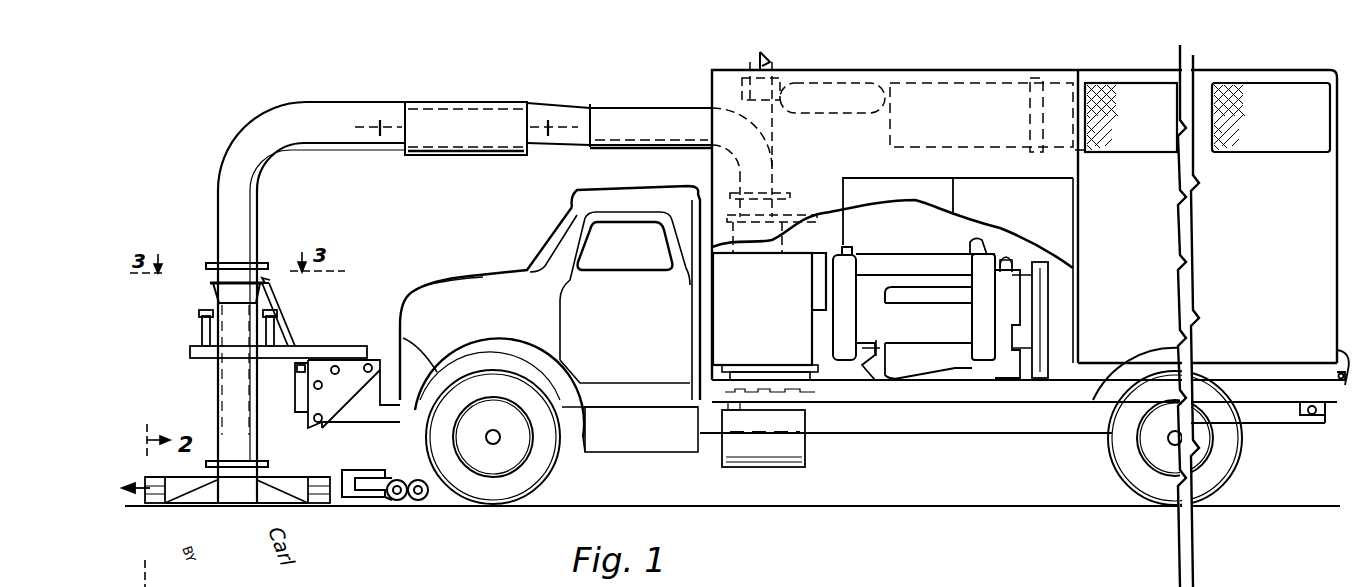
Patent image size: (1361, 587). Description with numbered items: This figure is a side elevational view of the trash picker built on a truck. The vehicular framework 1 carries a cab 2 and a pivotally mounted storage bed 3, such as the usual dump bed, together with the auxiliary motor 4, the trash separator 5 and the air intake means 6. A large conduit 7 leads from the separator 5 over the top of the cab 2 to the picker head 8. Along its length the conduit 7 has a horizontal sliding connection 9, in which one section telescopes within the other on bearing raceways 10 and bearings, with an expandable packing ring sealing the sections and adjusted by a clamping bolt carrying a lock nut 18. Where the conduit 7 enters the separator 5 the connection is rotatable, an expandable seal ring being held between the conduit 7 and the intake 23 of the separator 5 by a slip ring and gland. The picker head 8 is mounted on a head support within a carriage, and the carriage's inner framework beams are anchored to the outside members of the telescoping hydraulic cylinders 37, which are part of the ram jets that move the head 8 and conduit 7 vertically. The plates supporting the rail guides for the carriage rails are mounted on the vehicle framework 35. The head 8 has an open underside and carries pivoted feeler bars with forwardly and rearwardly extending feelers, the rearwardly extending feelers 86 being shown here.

The vehicular framework 1 is at (1142, 309).
The cab 2 is at (640, 186).
The pivotally mounted storage bed 3 is at (1348, 360).
The auxiliary motor 4 is at (930, 366).
The trash separator 5 is at (725, 325).
The air intake means 6 is at (1147, 100).
The large conduit 7 is at (262, 182).
The picker head 8 is at (380, 130).
The horizontal sliding connection 9 is at (462, 102).
The bearing raceways 10 is at (238, 275).
The lock nut 18 is at (278, 478).
The intake 23 is at (742, 200).
The vehicle framework 35 is at (395, 430).
The telescoping hydraulic cylinders 37 is at (200, 323).
The rearwardly extending feelers 86 is at (418, 503).